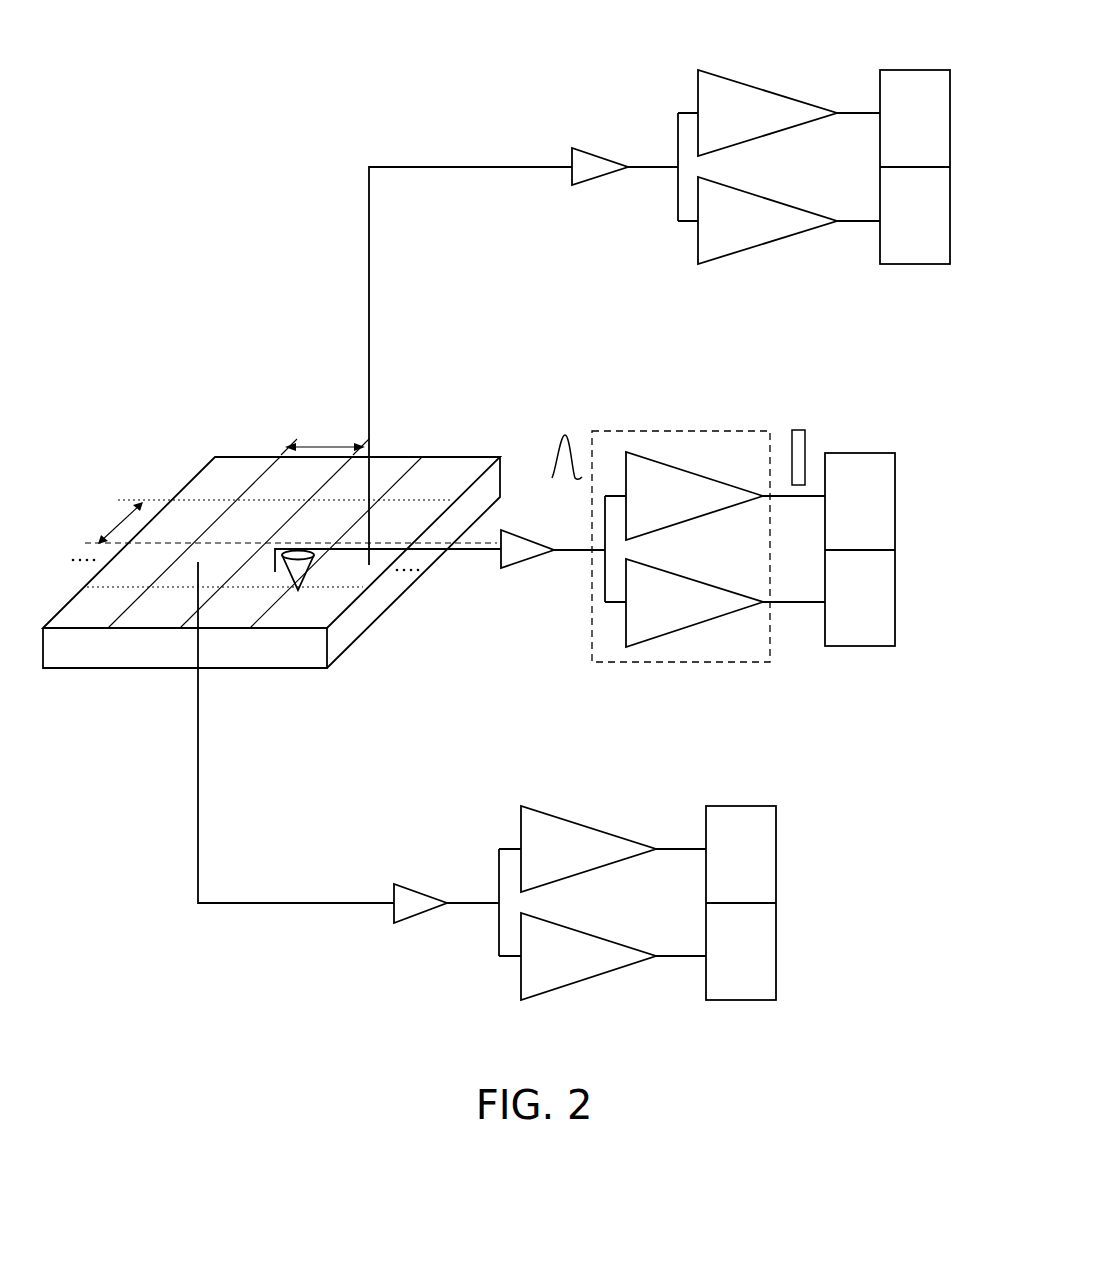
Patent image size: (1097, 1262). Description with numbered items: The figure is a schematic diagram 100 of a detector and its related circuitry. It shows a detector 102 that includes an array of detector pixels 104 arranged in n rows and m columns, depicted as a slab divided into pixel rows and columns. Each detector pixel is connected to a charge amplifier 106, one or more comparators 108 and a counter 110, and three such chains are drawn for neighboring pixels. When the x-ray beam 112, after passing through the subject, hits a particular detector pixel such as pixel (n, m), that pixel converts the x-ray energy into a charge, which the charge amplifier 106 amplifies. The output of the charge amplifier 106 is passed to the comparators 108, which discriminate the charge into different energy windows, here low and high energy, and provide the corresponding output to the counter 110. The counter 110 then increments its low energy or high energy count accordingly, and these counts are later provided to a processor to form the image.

The schematic diagram 100 is at (410, 58).
The detector 102 is at (166, 484).
The detector pixels 104 is at (182, 582).
The charge amplifier 106 is at (602, 151).
The comparators 108 is at (743, 82).
The counter 110 is at (914, 69).
The x-ray beam 112 is at (297, 594).